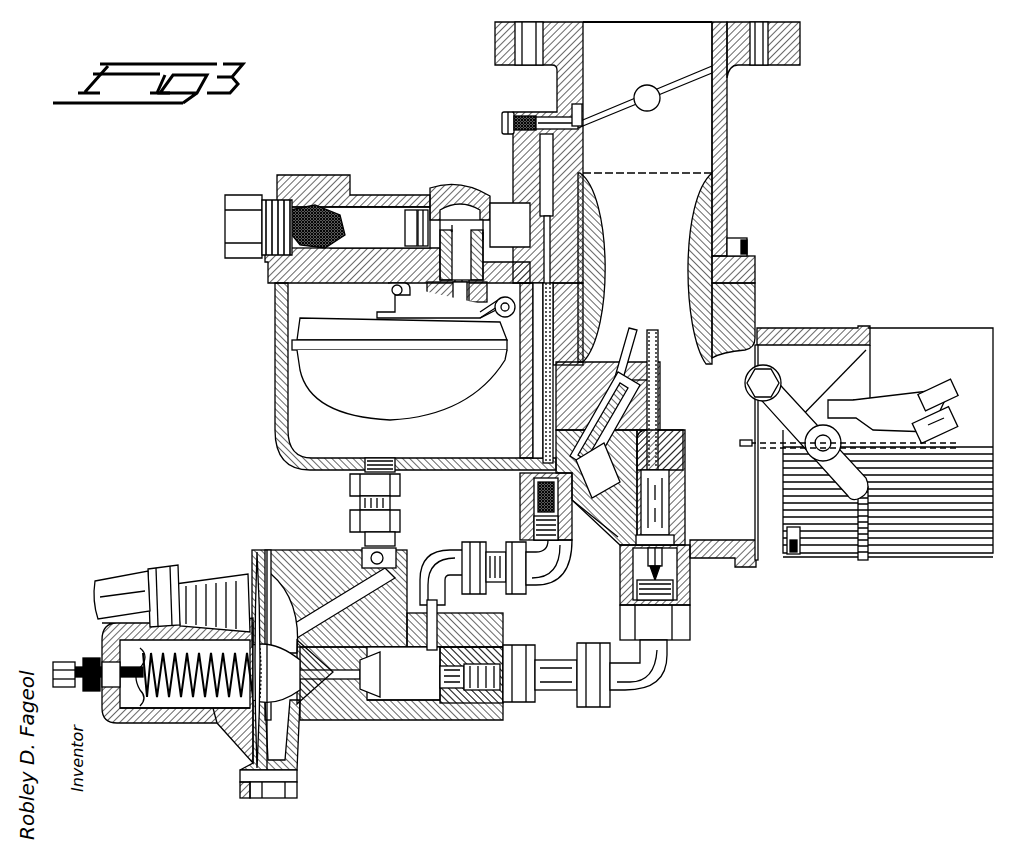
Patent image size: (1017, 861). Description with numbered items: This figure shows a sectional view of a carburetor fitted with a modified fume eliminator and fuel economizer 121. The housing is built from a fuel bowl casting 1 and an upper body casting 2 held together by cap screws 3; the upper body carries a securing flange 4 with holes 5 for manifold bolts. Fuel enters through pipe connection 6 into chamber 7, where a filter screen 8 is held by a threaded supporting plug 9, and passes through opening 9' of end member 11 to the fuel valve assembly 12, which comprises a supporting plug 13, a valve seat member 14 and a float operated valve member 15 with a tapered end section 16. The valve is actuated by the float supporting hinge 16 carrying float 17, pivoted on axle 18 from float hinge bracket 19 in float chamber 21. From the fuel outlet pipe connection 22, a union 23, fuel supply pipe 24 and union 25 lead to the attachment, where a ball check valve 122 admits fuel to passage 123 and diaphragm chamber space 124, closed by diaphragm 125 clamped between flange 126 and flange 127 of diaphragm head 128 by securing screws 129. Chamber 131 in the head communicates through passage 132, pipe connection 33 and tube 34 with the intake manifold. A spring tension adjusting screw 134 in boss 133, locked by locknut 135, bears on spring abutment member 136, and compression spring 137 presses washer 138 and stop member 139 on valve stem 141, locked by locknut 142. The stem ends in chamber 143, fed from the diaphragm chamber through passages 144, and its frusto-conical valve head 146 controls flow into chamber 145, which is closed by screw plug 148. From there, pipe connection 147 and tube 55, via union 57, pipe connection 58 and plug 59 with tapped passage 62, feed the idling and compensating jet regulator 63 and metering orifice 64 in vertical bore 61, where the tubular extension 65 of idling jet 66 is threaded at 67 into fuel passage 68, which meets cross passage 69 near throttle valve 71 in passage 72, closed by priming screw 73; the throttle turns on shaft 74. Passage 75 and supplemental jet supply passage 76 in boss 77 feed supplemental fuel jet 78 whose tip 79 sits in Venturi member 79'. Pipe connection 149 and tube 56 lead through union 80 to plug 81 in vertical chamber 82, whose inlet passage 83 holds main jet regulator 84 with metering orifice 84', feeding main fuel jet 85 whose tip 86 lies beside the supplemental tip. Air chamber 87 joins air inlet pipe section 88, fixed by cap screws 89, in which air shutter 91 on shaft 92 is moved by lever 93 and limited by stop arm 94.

The fuel bowl casting 1 is at (752, 320).
The upper body casting 2 is at (728, 200).
The cap or machine screws 3 is at (748, 242).
The securing flange 4 is at (797, 52).
The holes 5 is at (537, 60).
The pipe connection 6 is at (340, 175).
The chamber 7 is at (370, 200).
The filter screen 8 is at (393, 212).
The threaded supporting plug 9 is at (258, 211).
The opening 9' is at (429, 205).
The end member 11 is at (402, 242).
The fuel valve assembly 12 is at (482, 224).
The fuel valve supporting plug 13 is at (392, 300).
The valve seat member 14 is at (463, 240).
The float operated valve member 15 is at (484, 244).
The float supporting hinge 16 is at (468, 222).
The float 17 is at (310, 358).
The axle 18 is at (482, 316).
The float hinge bracket 19 is at (507, 315).
The float chamber 21 is at (296, 394).
The fuel outlet pipe connection 22 is at (365, 464).
The union 23 is at (350, 490).
The fuel supply pipe 24 is at (360, 508).
The union 25 is at (392, 534).
The pipe connection 33 is at (166, 578).
The tube or conduit 34 is at (118, 584).
The idling and supplemental fuel supply tube 55 is at (494, 548).
The main jet fuel supply tube 56 is at (566, 680).
The union 57 is at (460, 550).
The pipe connection 58 is at (535, 585).
The plug 59 is at (568, 540).
The vertical bore 61 is at (534, 482).
The tapped fuel passage 62 is at (536, 495).
The idling and compensating jet regulator 63 is at (570, 510).
The fuel metering orifice 64 is at (534, 512).
The tubular extension 65 is at (542, 388).
The idling jet 66 is at (600, 246).
The threaded upper end 67 is at (536, 252).
The fuel passage 68 is at (540, 172).
The cross passage 69 is at (583, 110).
The throttle valve 71 is at (686, 80).
The passage 72 is at (697, 135).
The priming hole screw 73 is at (500, 118).
The throttle valve shaft 74 is at (636, 110).
The passage 75 is at (598, 420).
The supplemental jet supply passage 76 is at (598, 470).
The boss 77 is at (636, 432).
The supplemental fuel jet 78 is at (610, 388).
The tip 79 is at (620, 362).
The Venturi member or choke tube 79' is at (743, 236).
The union and pipe connection 80 is at (692, 635).
The plug 81 is at (620, 588).
The vertical chamber 82 is at (668, 504).
The tapped fuel inlet passage 83 is at (676, 530).
The main jet regulator 84 is at (680, 574).
The metering orifice 84' is at (723, 543).
The main fuel jet 85 is at (672, 446).
The tip 86 is at (658, 392).
The air chamber 87 is at (762, 330).
The air inlet pipe section 88 is at (908, 340).
The cap screws 89 is at (792, 562).
The air shutter 91 is at (744, 446).
The air shutter shaft 92 is at (822, 452).
The air shutter lever 93 is at (788, 400).
The stop arm 94 is at (902, 412).
The fume eliminator and fuel economizer 121 is at (410, 716).
The ball check valve 122 is at (392, 552).
The passage 123 is at (340, 566).
The diaphragm chamber space 124 is at (300, 716).
The diaphragm 125 is at (250, 750).
The flange 126 is at (296, 792).
The flange 127 is at (246, 792).
The diaphragm head 128 is at (148, 722).
The securing screws 129 is at (296, 774).
The chamber 131 is at (130, 686).
The passage 132 is at (218, 586).
The boss 133 is at (104, 655).
The spring tension adjusting screw 134 is at (52, 664).
The locknut 135 is at (84, 658).
The spring abutment member 136 is at (135, 648).
The compression spring 137 is at (165, 724).
The washer 138 is at (225, 718).
The diaphragm securing and stop member 139 is at (277, 665).
The valve stem 141 is at (382, 654).
The locknut 142 is at (177, 712).
The chamber 143 is at (356, 708).
The passages 144 is at (277, 661).
The chamber 145 is at (440, 708).
The frusto-conical valve head 146 is at (382, 668).
The pipe connection 147 is at (445, 604).
The screw plug 148 is at (508, 652).
The pipe connection 149 is at (590, 660).